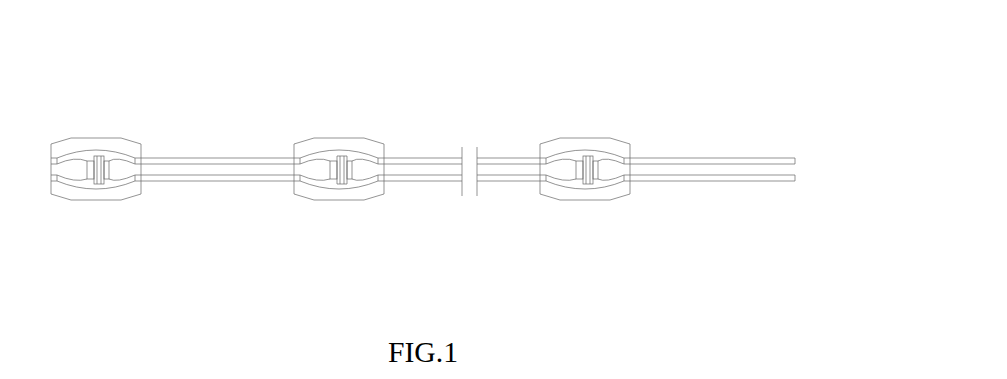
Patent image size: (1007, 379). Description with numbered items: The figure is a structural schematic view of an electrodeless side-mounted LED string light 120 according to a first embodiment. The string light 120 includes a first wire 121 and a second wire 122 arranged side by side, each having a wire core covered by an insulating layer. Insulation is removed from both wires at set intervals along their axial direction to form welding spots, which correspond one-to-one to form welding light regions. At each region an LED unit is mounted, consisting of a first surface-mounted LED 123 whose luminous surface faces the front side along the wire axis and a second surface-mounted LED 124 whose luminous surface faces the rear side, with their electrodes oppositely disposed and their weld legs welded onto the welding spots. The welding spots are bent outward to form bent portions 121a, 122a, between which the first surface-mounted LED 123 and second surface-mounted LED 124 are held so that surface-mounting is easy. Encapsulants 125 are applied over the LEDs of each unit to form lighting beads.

The electrodeless side-mounted LED string light 120 is at (507, 70).
The first wire 121 is at (218, 157).
The bent portion 121a is at (341, 156).
The second wire 122 is at (216, 182).
The bent portion 122a is at (343, 184).
The first surface-mounted LED 123 is at (333, 161).
The second surface-mounted LED 124 is at (351, 161).
The encapsulant 125 is at (383, 193).